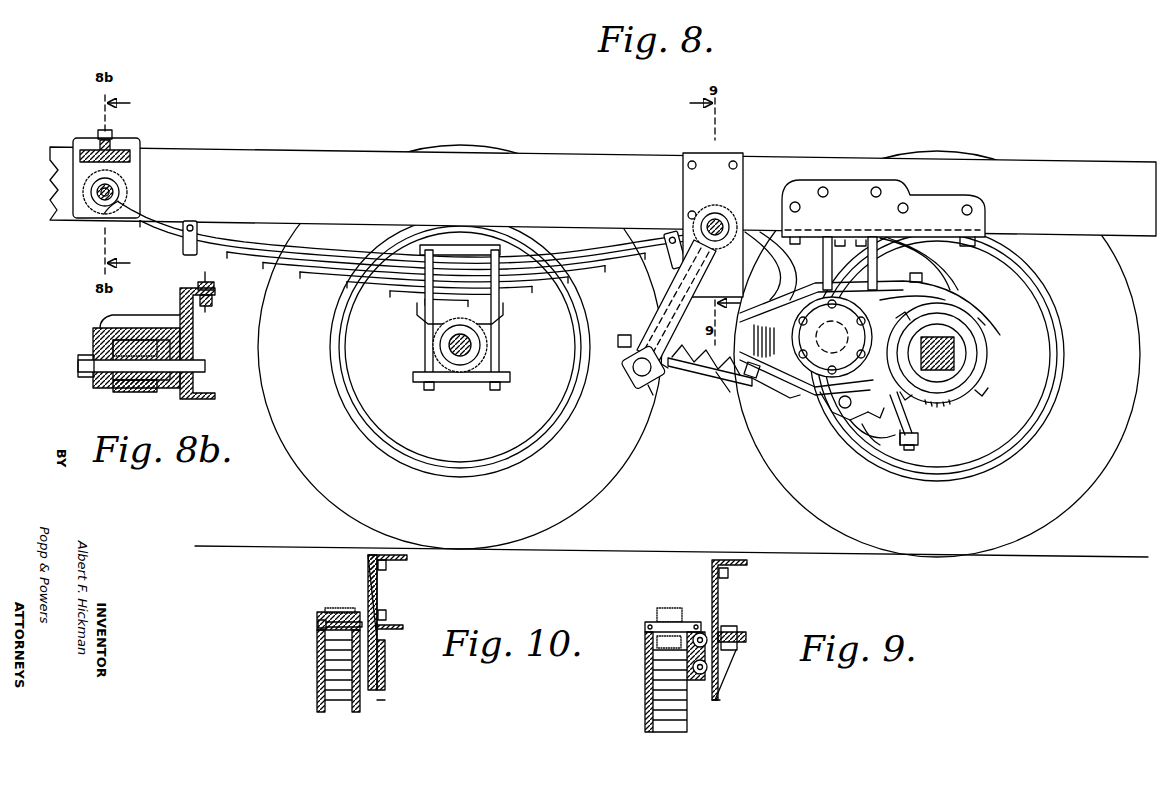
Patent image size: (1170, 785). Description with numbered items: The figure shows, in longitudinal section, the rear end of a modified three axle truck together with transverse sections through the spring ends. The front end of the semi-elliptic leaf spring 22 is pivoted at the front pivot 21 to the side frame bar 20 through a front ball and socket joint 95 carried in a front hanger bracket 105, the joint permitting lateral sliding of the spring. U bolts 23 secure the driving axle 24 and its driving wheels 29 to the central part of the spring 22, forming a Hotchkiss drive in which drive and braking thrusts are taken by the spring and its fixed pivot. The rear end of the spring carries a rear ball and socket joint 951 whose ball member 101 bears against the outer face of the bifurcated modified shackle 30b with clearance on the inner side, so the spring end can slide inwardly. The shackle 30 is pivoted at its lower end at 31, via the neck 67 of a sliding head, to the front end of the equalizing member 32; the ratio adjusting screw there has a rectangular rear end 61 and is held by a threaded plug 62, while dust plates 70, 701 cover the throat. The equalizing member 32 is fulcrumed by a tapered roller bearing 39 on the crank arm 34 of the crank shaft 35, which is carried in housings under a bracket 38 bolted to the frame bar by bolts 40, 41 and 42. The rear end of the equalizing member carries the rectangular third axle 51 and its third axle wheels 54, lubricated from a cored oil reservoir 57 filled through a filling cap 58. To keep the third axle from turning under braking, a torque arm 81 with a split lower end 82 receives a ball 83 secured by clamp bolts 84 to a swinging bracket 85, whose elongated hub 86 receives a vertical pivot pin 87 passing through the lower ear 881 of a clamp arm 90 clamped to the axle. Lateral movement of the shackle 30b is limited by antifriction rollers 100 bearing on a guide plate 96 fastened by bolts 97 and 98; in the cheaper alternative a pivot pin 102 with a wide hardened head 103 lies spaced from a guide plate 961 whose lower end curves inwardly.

In FIG. 8, the side rail or frame bar 20 is at (298, 150).
In FIG. 8B, the side rail or frame bar 20 is at (193, 325).
In FIG. 10, the side rail or frame bar 20 is at (400, 560).
In FIG. 9, the side rail or frame bar 20 is at (745, 560).
In FIG. 8, the front pivot 21 is at (125, 190).
In FIG. 8B, the front pivot 21 is at (78, 368).
In FIG. 8, the semi-elliptic leaf spring 22 is at (252, 278).
In FIG. 8B, the semi-elliptic leaf spring 22 is at (243, 285).
In FIG. 10, the semi-elliptic leaf spring 22 is at (330, 612).
In FIG. 9, the semi-elliptic leaf spring 22 is at (657, 612).
In FIG. 8, the U bolts 23 is at (490, 390).
In FIG. 8, the driving axle 24 is at (472, 345).
In FIG. 8, the driving wheels 29 is at (565, 518).
In FIG. 8, the shackle 30 is at (668, 310).
In FIG. 10, the shackle 30 is at (318, 692).
In FIG. 9, the shackle 30 is at (652, 698).
In FIG. 8, the modified shackle 30b is at (672, 372).
In FIG. 8, the lower shackle pivot 31 is at (632, 378).
In FIG. 8, the equalizing member 32 is at (760, 378).
In FIG. 8, the crank arm 34 is at (798, 402).
In FIG. 8, the crank shaft 35 is at (872, 322).
In FIG. 8, the bracket 38 is at (888, 246).
In FIG. 8, the tapered roller bearing 39 is at (805, 334).
In FIG. 8, the bolts 40 is at (876, 186).
In FIG. 8, the bolts 41 is at (880, 232).
In FIG. 8, the bolts 42 is at (862, 250).
In FIG. 8, the third axle 51 is at (955, 355).
In FIG. 8, the third axle wheels 54 is at (1025, 522).
In FIG. 8, the cored oil reservoir 57 is at (960, 290).
In FIG. 8, the filling cap 58 is at (922, 278).
In FIG. 8, the rear end of adjusting screw 61 is at (792, 398).
In FIG. 8, the threaded plug or head 62 is at (625, 336).
In FIG. 8, the neck 67 is at (660, 400).
In FIG. 8, the dust plate 70 is at (690, 376).
In FIG. 8, the dust plate 701 is at (718, 390).
In FIG. 8, the torque arm 81 is at (878, 420).
In FIG. 8, the split lower end of torque arm 82 is at (860, 428).
In FIG. 8, the ball 83 is at (838, 404).
In FIG. 8, the clamp bolts 84 is at (845, 418).
In FIG. 8, the swinging bracket 85 is at (882, 440).
In FIG. 8, the vertically elongated hub 86 is at (895, 425).
In FIG. 8, the vertical pivot pin 87 is at (908, 450).
In FIG. 8, the lower ear 881 is at (918, 440).
In FIG. 8, the clamp arm 90 is at (930, 410).
In FIG. 8, the front ball and socket joint 95 is at (88, 185).
In FIG. 8B, the front ball and socket joint 95 is at (97, 350).
In FIG. 8, the guide plate 96 is at (702, 160).
In FIG. 9, the guide plate 96 is at (712, 592).
In FIG. 8, the bolts 97 is at (690, 162).
In FIG. 10, the bolts 97 is at (387, 568).
In FIG. 9, the bolts 97 is at (730, 573).
In FIG. 9, the bolts 98 is at (745, 650).
In FIG. 8, the antifriction rollers 100 is at (745, 280).
In FIG. 9, the antifriction rollers 100 is at (700, 632).
In FIG. 9, the ball member 101 is at (672, 608).
In FIG. 10, the pivot pin 102 is at (318, 623).
In FIG. 10, the hardened head 103 is at (355, 612).
In FIG. 8, the spring hanger bracket 105 is at (125, 167).
In FIG. 8B, the spring hanger bracket 105 is at (120, 318).
In FIG. 8, the rear ball and socket joint 951 is at (718, 206).
In FIG. 9, the rear ball and socket joint 951 is at (645, 625).
In FIG. 10, the guide plate 961 is at (372, 572).